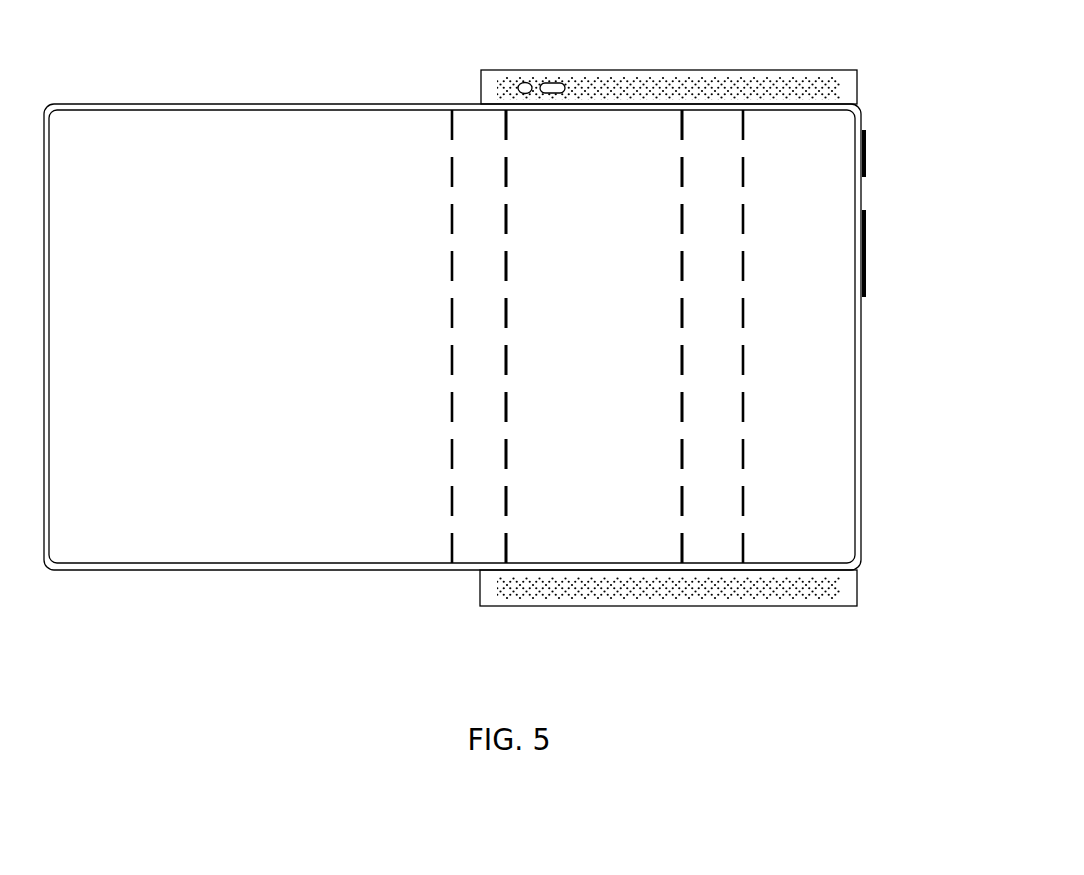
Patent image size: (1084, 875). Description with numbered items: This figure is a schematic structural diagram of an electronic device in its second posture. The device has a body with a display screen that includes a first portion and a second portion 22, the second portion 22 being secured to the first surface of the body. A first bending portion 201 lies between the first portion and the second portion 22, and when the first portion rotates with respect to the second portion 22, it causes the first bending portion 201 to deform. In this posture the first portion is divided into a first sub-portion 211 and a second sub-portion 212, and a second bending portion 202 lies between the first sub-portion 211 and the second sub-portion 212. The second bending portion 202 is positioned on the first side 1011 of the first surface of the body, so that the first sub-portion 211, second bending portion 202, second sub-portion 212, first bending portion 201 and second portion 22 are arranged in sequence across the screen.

The second portion 22 is at (820, 197).
The first side 1011 is at (485, 92).
The first sub-portion 211 is at (315, 527).
The second bending portion 202 is at (467, 550).
The second sub-portion 212 is at (588, 133).
The first bending portion 201 is at (720, 535).